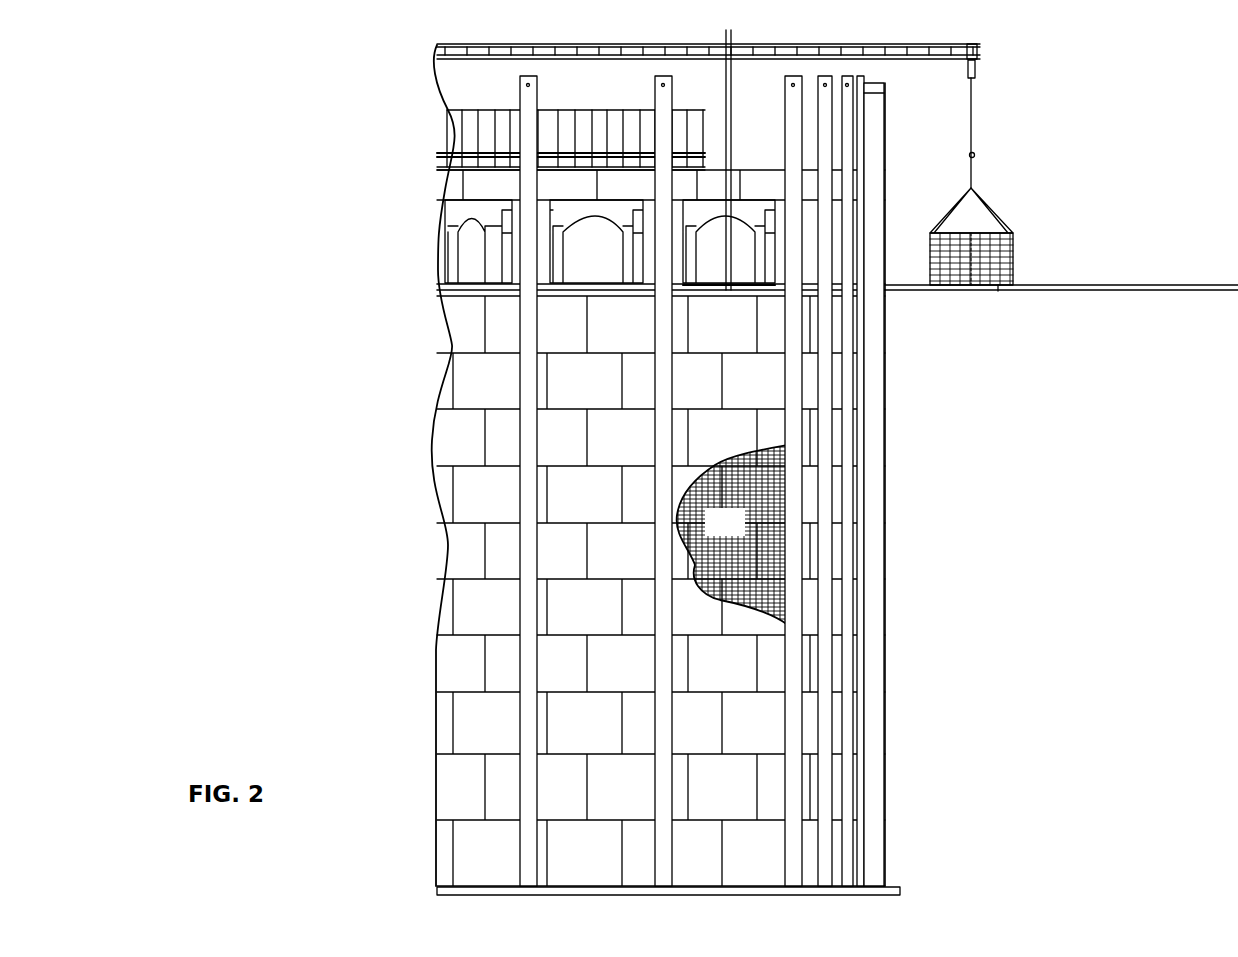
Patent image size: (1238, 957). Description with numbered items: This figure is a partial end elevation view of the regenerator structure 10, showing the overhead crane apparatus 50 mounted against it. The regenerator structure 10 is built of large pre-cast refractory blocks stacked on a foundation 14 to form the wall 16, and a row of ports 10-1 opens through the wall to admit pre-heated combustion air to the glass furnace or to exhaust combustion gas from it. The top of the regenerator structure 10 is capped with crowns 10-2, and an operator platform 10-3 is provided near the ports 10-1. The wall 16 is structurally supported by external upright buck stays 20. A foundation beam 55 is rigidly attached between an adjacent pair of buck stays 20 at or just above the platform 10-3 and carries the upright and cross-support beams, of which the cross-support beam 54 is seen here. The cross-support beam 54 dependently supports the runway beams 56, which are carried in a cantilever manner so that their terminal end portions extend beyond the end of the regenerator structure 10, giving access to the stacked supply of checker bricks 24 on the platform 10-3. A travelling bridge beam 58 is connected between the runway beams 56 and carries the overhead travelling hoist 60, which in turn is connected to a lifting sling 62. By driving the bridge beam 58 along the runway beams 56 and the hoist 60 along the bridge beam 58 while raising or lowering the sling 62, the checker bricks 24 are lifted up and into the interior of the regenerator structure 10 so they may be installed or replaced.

The regenerator structure 10 is at (430, 518).
The ports 10-1 is at (470, 249).
The crowns 10-2 is at (500, 127).
The operator platform 10-3 is at (1210, 285).
The foundation 14 is at (895, 888).
The side wall 16 is at (603, 505).
The buck stays 20 is at (665, 800).
The checker bricks 24 is at (1110, 248).
The overhead crane apparatus 50 is at (969, 35).
The cross-support beam 54 is at (729, 38).
The foundation beam 55 is at (707, 284).
The runway beams 56 is at (888, 44).
The travelling bridge beam 58 is at (974, 52).
The overhead travelling hoist 60 is at (968, 66).
The lifting sling 62 is at (976, 155).